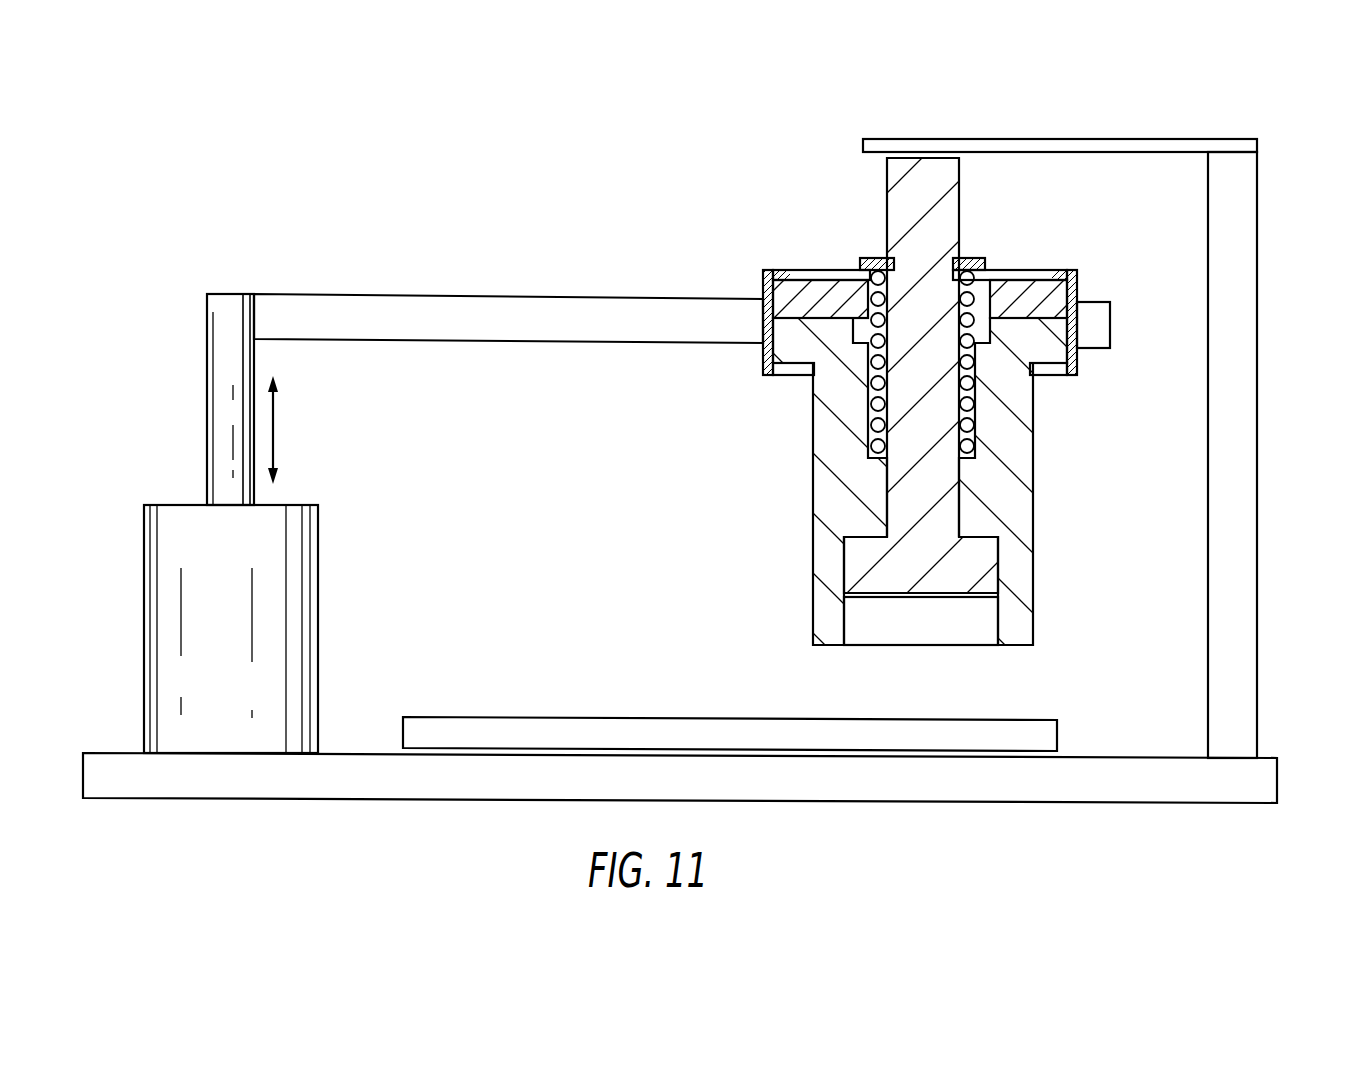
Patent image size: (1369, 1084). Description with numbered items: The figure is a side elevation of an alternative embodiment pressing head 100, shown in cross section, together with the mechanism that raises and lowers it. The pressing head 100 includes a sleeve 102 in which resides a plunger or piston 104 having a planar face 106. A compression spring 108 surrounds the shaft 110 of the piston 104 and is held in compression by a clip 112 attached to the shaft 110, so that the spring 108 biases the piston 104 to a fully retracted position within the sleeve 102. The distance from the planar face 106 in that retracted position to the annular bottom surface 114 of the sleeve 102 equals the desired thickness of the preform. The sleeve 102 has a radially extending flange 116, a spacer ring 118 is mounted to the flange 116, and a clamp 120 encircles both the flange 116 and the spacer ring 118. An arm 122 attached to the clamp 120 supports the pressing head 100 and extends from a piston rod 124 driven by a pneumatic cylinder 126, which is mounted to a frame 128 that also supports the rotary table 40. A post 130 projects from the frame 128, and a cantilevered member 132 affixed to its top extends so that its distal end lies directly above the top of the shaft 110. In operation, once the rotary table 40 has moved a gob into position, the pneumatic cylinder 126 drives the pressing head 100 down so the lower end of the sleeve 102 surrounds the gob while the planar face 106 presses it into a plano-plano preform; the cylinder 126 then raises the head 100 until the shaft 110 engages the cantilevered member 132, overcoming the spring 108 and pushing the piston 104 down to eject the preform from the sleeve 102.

The rotary table 40 is at (558, 717).
The pressing head 100 is at (780, 534).
The sleeve 102 is at (813, 448).
The piston 104 is at (985, 558).
The planar face 106 is at (943, 597).
The compression spring 108 is at (973, 398).
The shaft 110 is at (895, 200).
The clip 112 is at (985, 258).
The annular bottom surface 114 is at (825, 647).
The flange 116 is at (762, 354).
The spacer ring 118 is at (815, 282).
The clamp 120 is at (1082, 290).
The arm 122 is at (527, 308).
The piston rod 124 is at (215, 408).
The pneumatic cylinder 126 is at (302, 598).
The frame 128 is at (278, 787).
The post 130 is at (1243, 462).
The cantilevered member 132 is at (1107, 138).